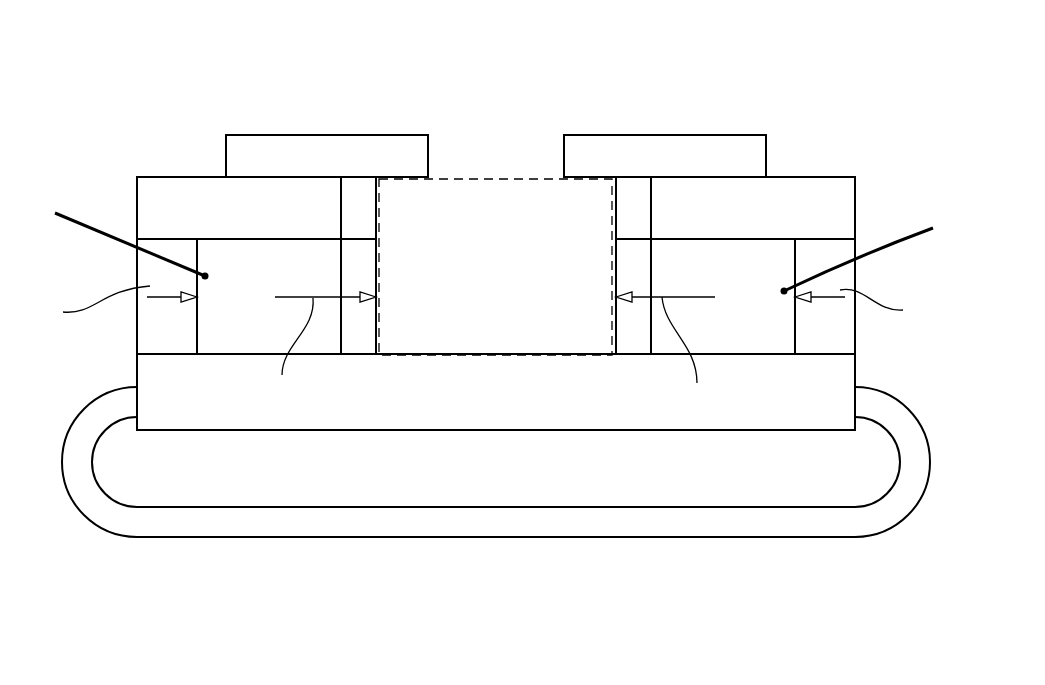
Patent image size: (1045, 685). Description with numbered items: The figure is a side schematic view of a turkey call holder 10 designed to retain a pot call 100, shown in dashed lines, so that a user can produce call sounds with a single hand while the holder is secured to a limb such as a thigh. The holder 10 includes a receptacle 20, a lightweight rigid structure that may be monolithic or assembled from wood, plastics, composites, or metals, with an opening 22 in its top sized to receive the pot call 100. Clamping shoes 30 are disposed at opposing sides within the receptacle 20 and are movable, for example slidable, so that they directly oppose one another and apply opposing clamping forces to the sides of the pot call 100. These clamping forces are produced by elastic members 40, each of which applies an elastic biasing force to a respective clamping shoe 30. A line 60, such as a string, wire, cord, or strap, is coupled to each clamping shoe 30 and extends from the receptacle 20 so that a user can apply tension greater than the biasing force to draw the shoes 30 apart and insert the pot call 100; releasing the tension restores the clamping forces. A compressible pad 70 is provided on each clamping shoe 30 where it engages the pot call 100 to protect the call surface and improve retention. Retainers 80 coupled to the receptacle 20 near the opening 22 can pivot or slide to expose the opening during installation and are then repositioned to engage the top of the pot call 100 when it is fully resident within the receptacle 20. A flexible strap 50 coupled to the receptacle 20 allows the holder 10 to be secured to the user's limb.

The turkey call holder 10 is at (128, 94).
The receptacle 20 is at (137, 193).
The opening 22 is at (347, 205).
The clamping shoe 30 is at (238, 252).
The elastic member 40 is at (147, 335).
The flexible strap 50 is at (918, 470).
The line 60 is at (85, 230).
The pad 70 is at (358, 335).
The retainer 80 is at (282, 153).
The pot call 100 is at (496, 178).